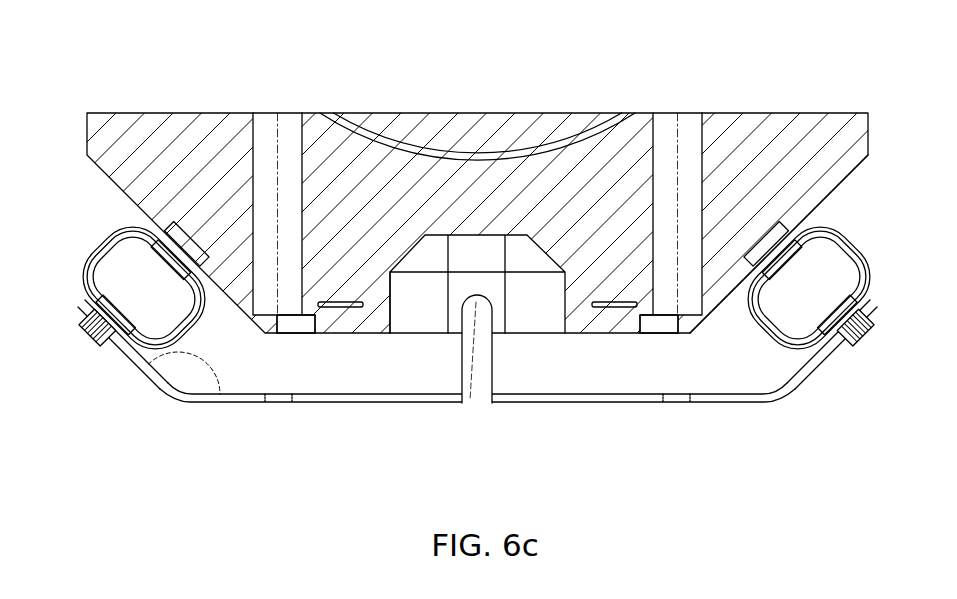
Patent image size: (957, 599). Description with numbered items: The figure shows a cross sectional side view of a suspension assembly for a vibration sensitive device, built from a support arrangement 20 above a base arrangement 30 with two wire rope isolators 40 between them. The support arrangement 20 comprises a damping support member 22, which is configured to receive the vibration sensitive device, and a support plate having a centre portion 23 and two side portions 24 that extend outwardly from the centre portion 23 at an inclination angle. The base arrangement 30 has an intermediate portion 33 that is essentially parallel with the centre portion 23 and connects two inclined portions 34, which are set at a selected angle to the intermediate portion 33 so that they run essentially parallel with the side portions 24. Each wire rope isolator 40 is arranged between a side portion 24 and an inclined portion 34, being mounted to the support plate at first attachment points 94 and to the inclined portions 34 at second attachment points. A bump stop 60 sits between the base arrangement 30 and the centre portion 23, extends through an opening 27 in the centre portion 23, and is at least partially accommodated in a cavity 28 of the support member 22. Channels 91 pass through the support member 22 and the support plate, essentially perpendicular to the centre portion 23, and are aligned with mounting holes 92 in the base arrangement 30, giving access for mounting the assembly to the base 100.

The base 100 is at (478, 263).
The support arrangement 20 is at (478, 246).
The damping support member 22 is at (740, 113).
The channels 91 is at (270, 125).
The first attachment points 94 is at (822, 213).
The side portions 24 is at (236, 305).
The centre portion 23 is at (355, 308).
The cavity 28 is at (504, 354).
The opening 27 is at (393, 308).
The bump stop 60 is at (492, 357).
The base arrangement 30 is at (477, 404).
The intermediate portion 33 is at (352, 403).
The inclined portions 34 is at (142, 377).
The mounting holes 92 is at (277, 403).
The wire rope isolators 40 is at (460, 279).